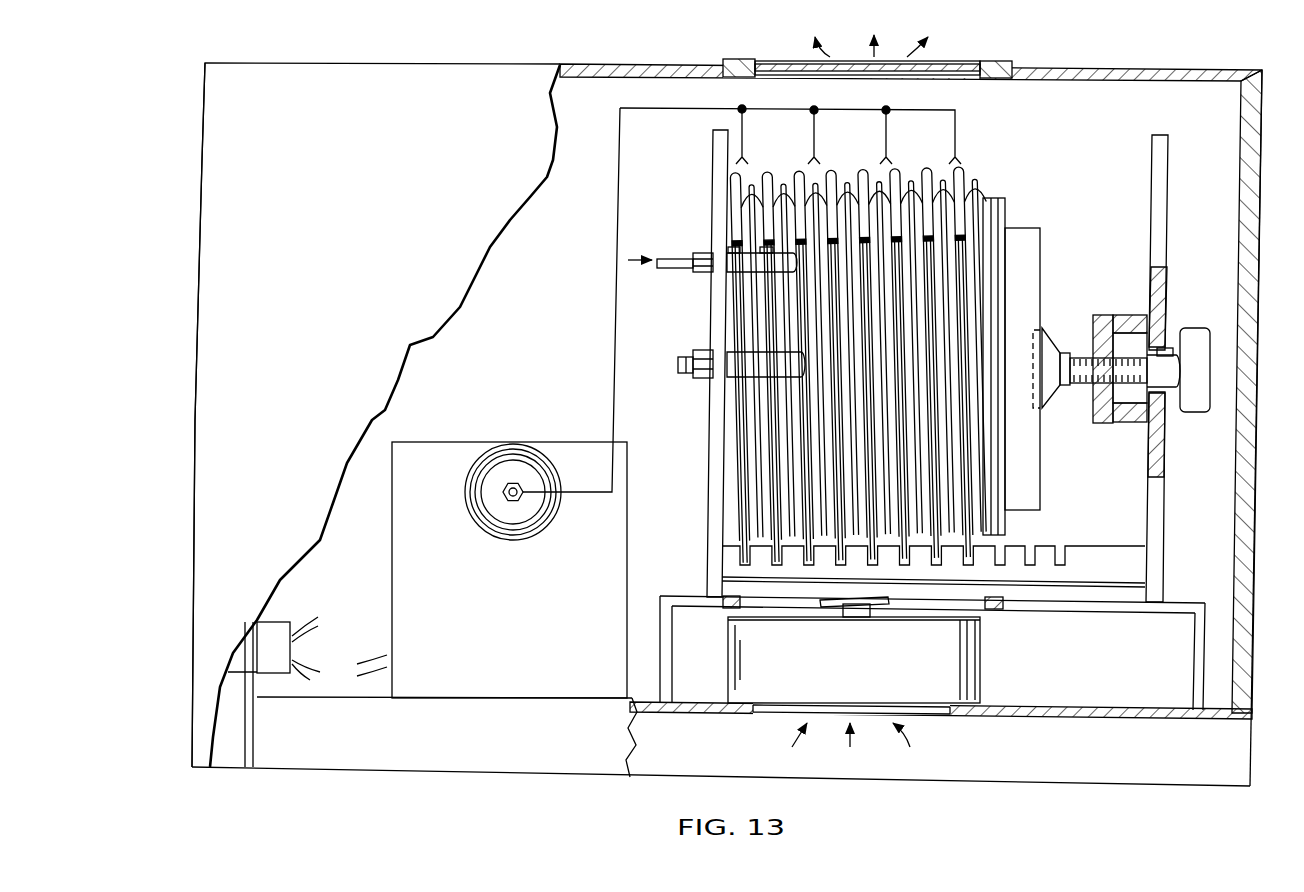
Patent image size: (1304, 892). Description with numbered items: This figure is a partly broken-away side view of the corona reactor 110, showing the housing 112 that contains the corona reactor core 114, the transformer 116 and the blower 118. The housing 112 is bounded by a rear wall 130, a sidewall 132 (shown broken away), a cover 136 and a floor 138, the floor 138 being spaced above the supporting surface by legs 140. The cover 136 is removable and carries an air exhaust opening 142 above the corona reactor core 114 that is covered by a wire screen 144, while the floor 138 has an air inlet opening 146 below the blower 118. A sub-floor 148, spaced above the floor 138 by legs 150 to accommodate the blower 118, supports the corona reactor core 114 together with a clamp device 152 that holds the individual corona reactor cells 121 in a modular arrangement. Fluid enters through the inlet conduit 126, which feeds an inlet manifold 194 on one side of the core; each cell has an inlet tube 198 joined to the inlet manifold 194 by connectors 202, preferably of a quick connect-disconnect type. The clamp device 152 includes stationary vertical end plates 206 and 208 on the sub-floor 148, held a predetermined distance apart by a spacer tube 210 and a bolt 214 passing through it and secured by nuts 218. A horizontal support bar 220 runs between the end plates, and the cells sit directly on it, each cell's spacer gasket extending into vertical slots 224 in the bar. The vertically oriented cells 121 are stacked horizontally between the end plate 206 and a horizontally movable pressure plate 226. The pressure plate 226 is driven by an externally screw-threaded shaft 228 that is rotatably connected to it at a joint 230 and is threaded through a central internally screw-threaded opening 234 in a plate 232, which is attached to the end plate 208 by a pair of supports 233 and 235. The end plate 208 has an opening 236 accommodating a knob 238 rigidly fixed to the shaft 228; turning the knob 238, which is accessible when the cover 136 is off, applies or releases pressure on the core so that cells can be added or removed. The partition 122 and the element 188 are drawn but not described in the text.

The corona reactor 110 is at (172, 267).
The housing 112 is at (210, 160).
The corona reactor core 114 is at (992, 186).
The transformer 116 is at (509, 570).
The blower 118 is at (854, 660).
The corona reactor cells 121 is at (855, 190).
The partition wall 122 is at (615, 340).
The inlet conduit 126 is at (662, 257).
The rear wall 130 is at (1256, 210).
The sidewall 132 is at (385, 416).
The cover 136 is at (1125, 70).
The floor 138 is at (1118, 718).
The legs 140 is at (1190, 765).
The air exhaust opening 142 is at (992, 76).
The wire screen 144 is at (933, 63).
The air inlet opening 146 is at (940, 716).
The sub-floor 148 is at (1082, 604).
The legs 150 is at (668, 663).
The clamp device 152 is at (1110, 272).
The terminal box 188 is at (282, 625).
The inlet manifold 194 is at (740, 265).
The inlet tube 198 is at (790, 182).
The connectors 202 is at (765, 247).
The end plate 206 is at (713, 158).
The end plate 208 is at (1168, 176).
The spacer tube 210 is at (740, 368).
The bolt 214 is at (680, 370).
The nuts 218 is at (700, 350).
The horizontal support bar 220 is at (1090, 547).
The vertical slots 224 is at (775, 557).
The pressure plate 226 is at (1040, 272).
The screw-threaded shaft 228 is at (1082, 358).
The joint 230 is at (1043, 395).
The plate 232 is at (1100, 423).
The support 233 is at (1118, 315).
The internally screw-threaded opening 234 is at (1097, 388).
The support 235 is at (1130, 425).
The opening 236 is at (1168, 350).
The knob 238 is at (1200, 410).